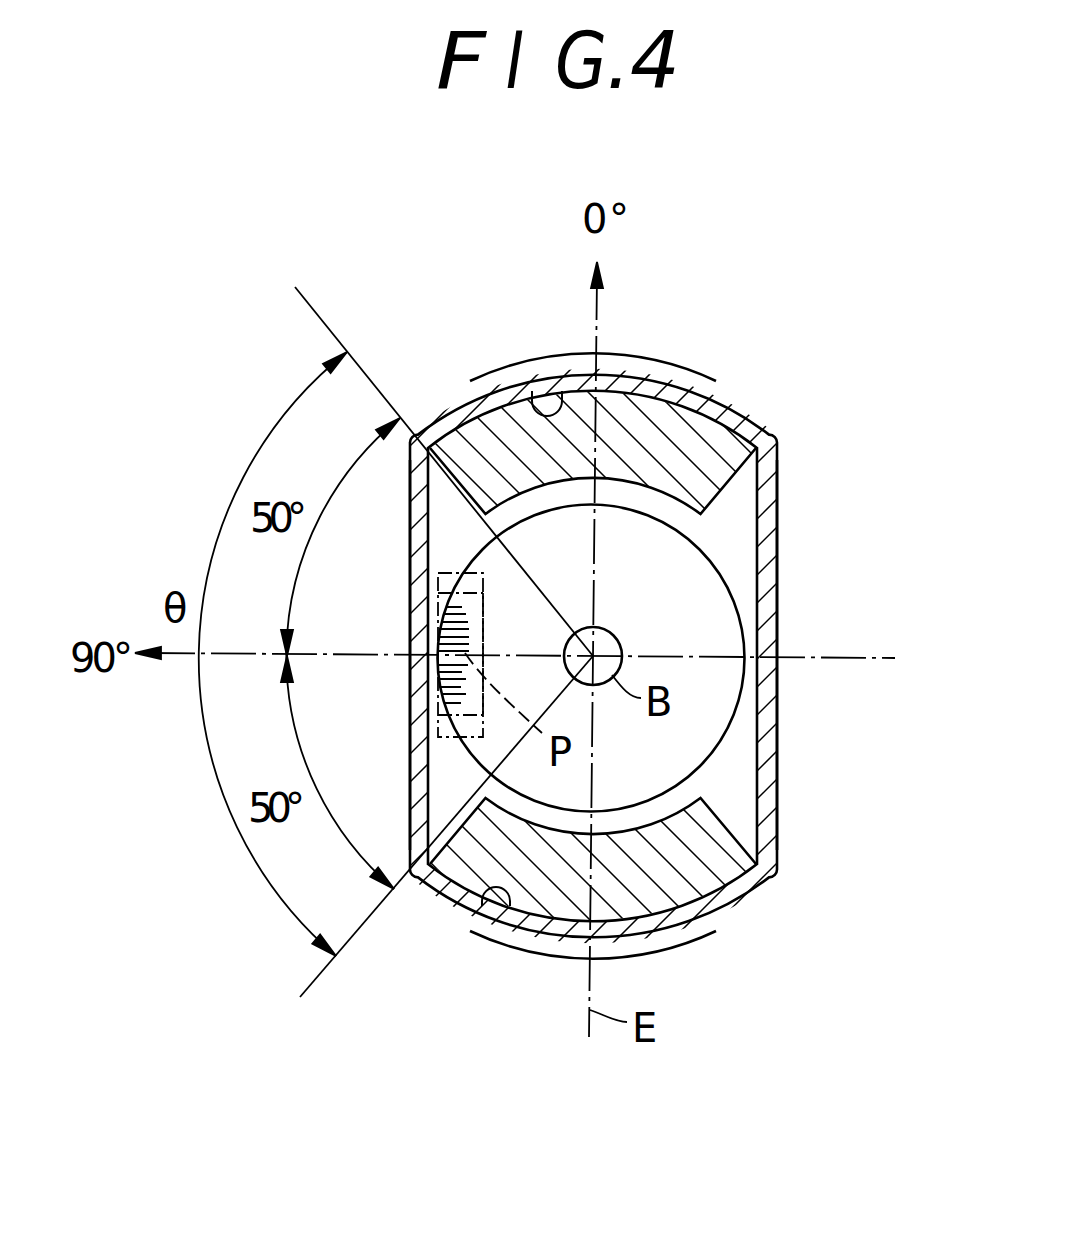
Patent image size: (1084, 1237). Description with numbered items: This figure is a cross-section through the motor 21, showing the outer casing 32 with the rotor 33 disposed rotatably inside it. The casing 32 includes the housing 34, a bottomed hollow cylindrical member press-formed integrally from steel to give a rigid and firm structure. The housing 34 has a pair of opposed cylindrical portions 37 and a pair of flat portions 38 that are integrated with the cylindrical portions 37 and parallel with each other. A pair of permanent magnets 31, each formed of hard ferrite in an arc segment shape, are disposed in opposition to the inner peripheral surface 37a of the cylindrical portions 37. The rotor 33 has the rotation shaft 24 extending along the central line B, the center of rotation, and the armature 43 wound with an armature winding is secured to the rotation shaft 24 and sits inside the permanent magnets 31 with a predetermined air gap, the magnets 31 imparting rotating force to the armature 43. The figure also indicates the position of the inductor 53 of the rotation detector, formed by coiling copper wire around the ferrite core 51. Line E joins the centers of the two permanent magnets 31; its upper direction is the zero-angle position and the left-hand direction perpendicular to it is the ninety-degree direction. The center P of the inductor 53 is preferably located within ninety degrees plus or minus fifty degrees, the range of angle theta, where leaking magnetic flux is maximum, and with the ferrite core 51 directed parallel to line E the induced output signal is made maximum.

The motor 21 is at (832, 308).
The rotation shaft 24 is at (608, 630).
The permanent magnets 31 is at (698, 443).
The outer casing 32 is at (790, 584).
The rotor 33 is at (730, 755).
The housing 34 is at (777, 488).
The cylindrical portions 37 is at (697, 390).
The inner peripheral surface 37a is at (530, 392).
The flat portions 38 is at (410, 693).
The armature 43 is at (703, 552).
The ferrite core 51 is at (453, 740).
The inductor 53 is at (490, 608).